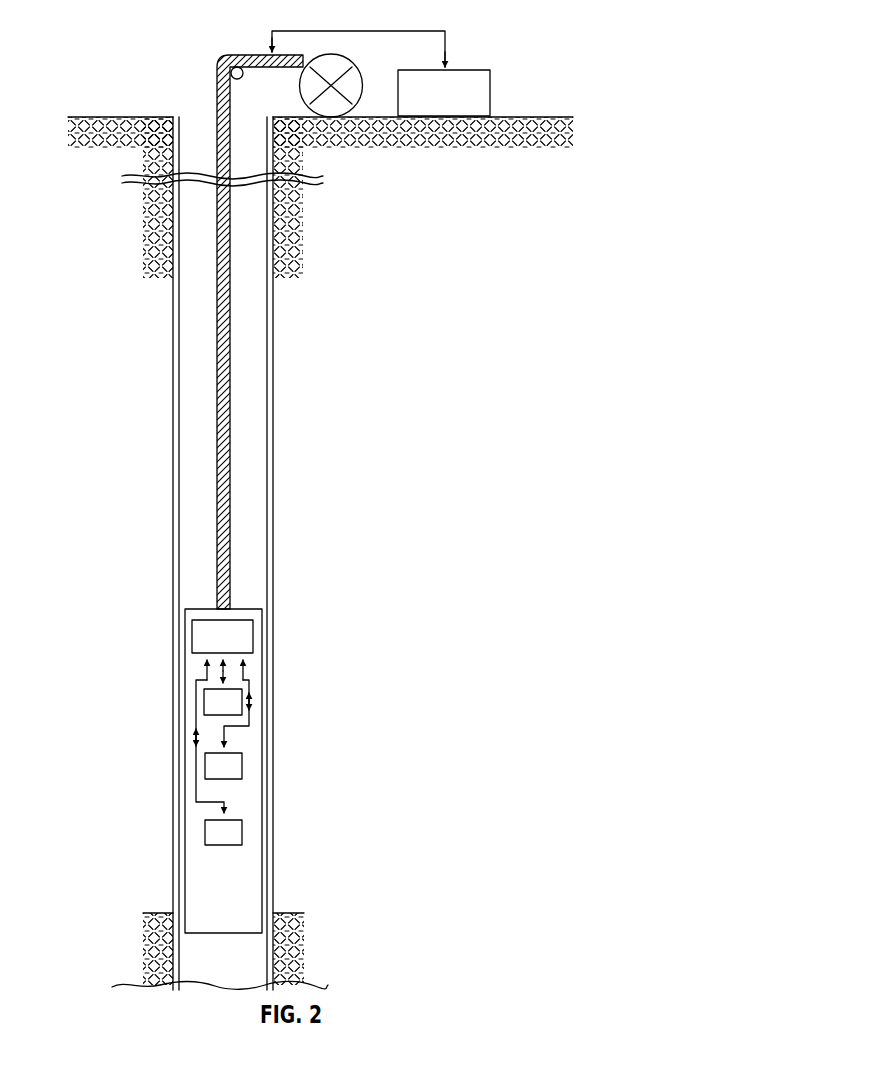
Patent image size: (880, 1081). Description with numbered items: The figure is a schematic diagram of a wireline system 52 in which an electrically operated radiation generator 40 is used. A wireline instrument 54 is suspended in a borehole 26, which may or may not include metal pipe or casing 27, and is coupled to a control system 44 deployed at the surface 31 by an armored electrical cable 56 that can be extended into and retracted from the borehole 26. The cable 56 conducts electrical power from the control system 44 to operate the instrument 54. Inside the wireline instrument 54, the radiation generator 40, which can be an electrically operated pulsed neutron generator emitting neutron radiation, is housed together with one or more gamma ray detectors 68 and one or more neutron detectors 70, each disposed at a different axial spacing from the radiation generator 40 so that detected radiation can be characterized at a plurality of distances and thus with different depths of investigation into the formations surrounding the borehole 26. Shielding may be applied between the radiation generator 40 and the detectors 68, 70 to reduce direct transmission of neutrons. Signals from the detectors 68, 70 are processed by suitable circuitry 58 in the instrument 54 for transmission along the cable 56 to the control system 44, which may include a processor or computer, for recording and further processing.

The borehole 26 is at (173, 502).
The casing 27 is at (179, 873).
The surface 31 is at (112, 117).
The radiation generator 40 is at (237, 832).
The control system 44 is at (478, 80).
The wireline system 52 is at (199, 128).
The wireline instrument 54 is at (201, 604).
The cable 56 is at (228, 63).
The circuitry 58 is at (236, 642).
The gamma ray detector 68 is at (237, 765).
The neutron detector 70 is at (205, 700).